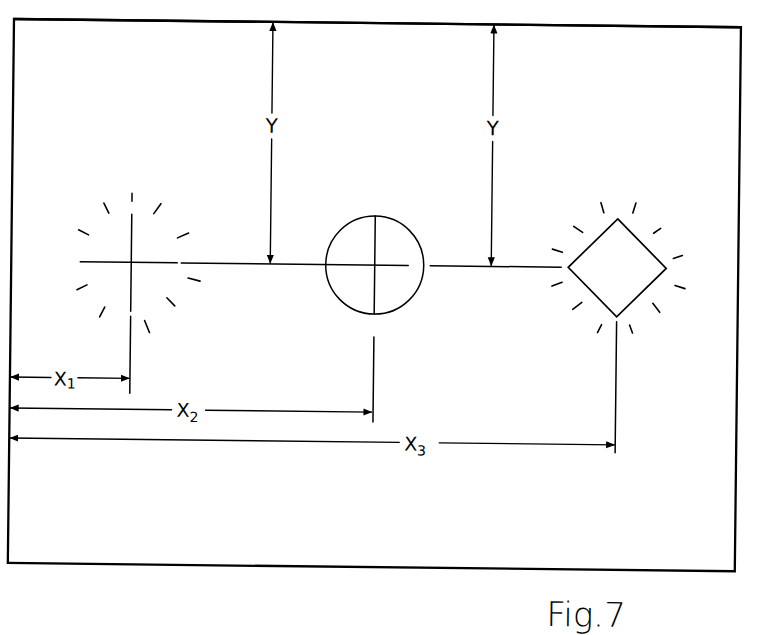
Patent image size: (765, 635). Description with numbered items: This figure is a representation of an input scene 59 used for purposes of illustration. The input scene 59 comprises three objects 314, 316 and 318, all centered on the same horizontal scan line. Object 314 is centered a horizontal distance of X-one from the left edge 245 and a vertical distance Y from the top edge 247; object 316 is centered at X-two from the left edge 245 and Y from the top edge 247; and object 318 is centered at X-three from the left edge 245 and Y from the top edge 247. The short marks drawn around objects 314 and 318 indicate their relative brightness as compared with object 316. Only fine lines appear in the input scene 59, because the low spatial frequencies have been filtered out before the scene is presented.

The left edge 245 is at (15, 187).
The top edge 247 is at (357, 20).
The input scene 59 is at (345, 517).
The object 314 is at (184, 216).
The object 316 is at (415, 218).
The object 318 is at (669, 225).